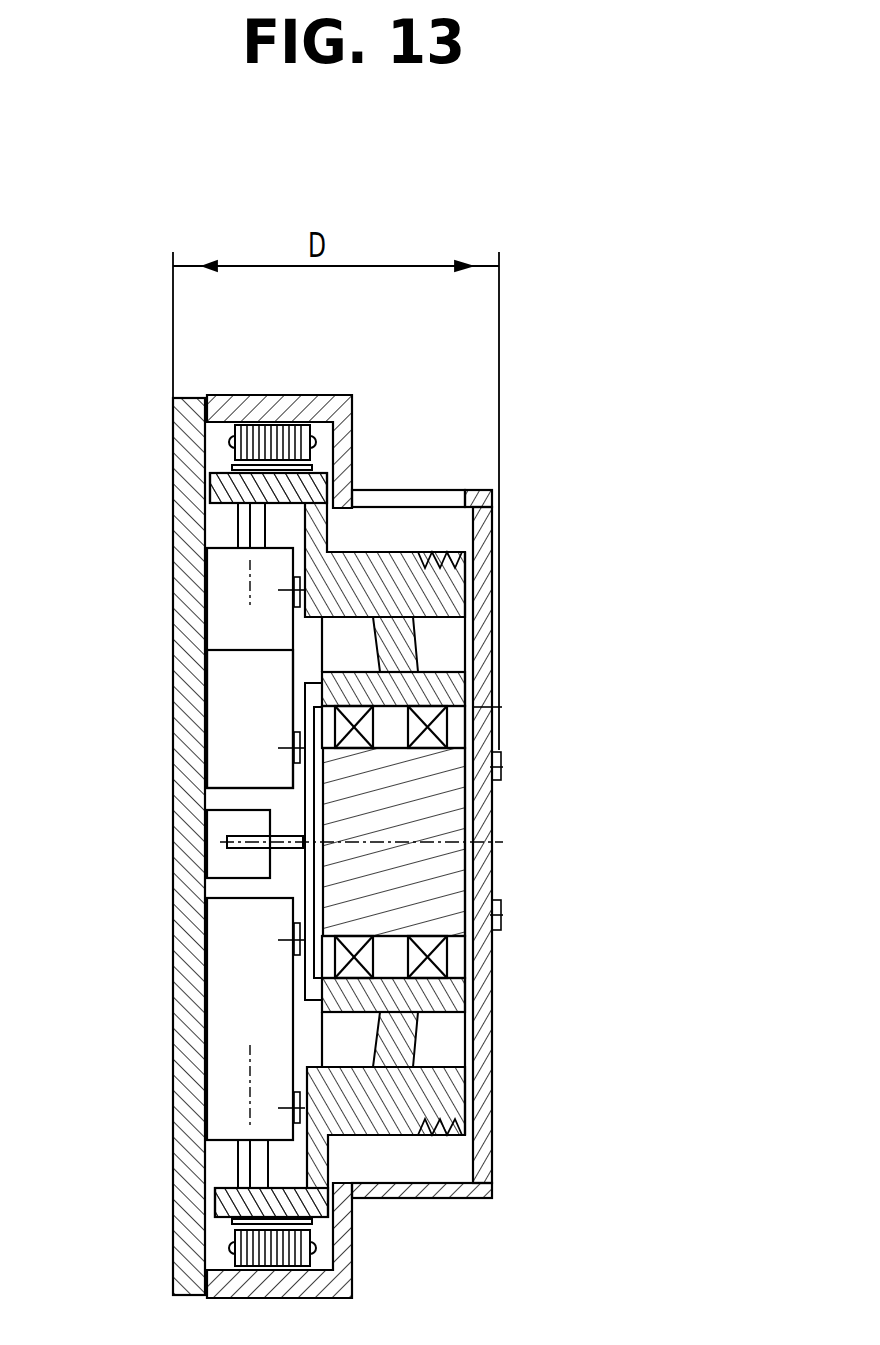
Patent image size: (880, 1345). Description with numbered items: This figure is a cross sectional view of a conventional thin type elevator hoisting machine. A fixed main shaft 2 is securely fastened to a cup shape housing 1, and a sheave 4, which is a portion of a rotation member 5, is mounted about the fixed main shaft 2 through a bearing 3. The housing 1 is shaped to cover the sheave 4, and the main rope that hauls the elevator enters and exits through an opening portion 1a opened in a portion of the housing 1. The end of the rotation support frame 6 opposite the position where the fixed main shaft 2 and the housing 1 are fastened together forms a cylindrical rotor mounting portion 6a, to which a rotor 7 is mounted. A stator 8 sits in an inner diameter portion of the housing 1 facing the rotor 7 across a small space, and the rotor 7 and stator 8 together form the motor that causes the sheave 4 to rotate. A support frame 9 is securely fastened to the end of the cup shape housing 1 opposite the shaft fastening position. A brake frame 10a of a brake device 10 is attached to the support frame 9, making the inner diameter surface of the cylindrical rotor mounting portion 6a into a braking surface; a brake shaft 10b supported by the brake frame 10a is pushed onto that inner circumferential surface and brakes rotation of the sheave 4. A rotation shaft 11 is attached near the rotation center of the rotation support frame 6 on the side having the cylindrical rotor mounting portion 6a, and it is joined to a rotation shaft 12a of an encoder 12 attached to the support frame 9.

The cup shape housing 1 is at (353, 427).
The opening portion 1a is at (437, 482).
The fixed main shaft 2 is at (440, 870).
The bearing 3 is at (448, 709).
The sheave 4 is at (478, 563).
The rotation member 5 is at (373, 553).
The rotation support frame 6 is at (333, 1167).
The cylindrical rotor mounting portion 6a is at (212, 497).
The rotor 7 is at (232, 468).
The stator 8 is at (230, 445).
The support frame 9 is at (173, 812).
The brake device 10 is at (232, 600).
The brake frame 10a is at (235, 687).
The brake shaft 10b is at (237, 536).
The rotation shaft 11 is at (303, 877).
The encoder 12 is at (223, 857).
The rotation shaft of encoder 12a is at (247, 847).